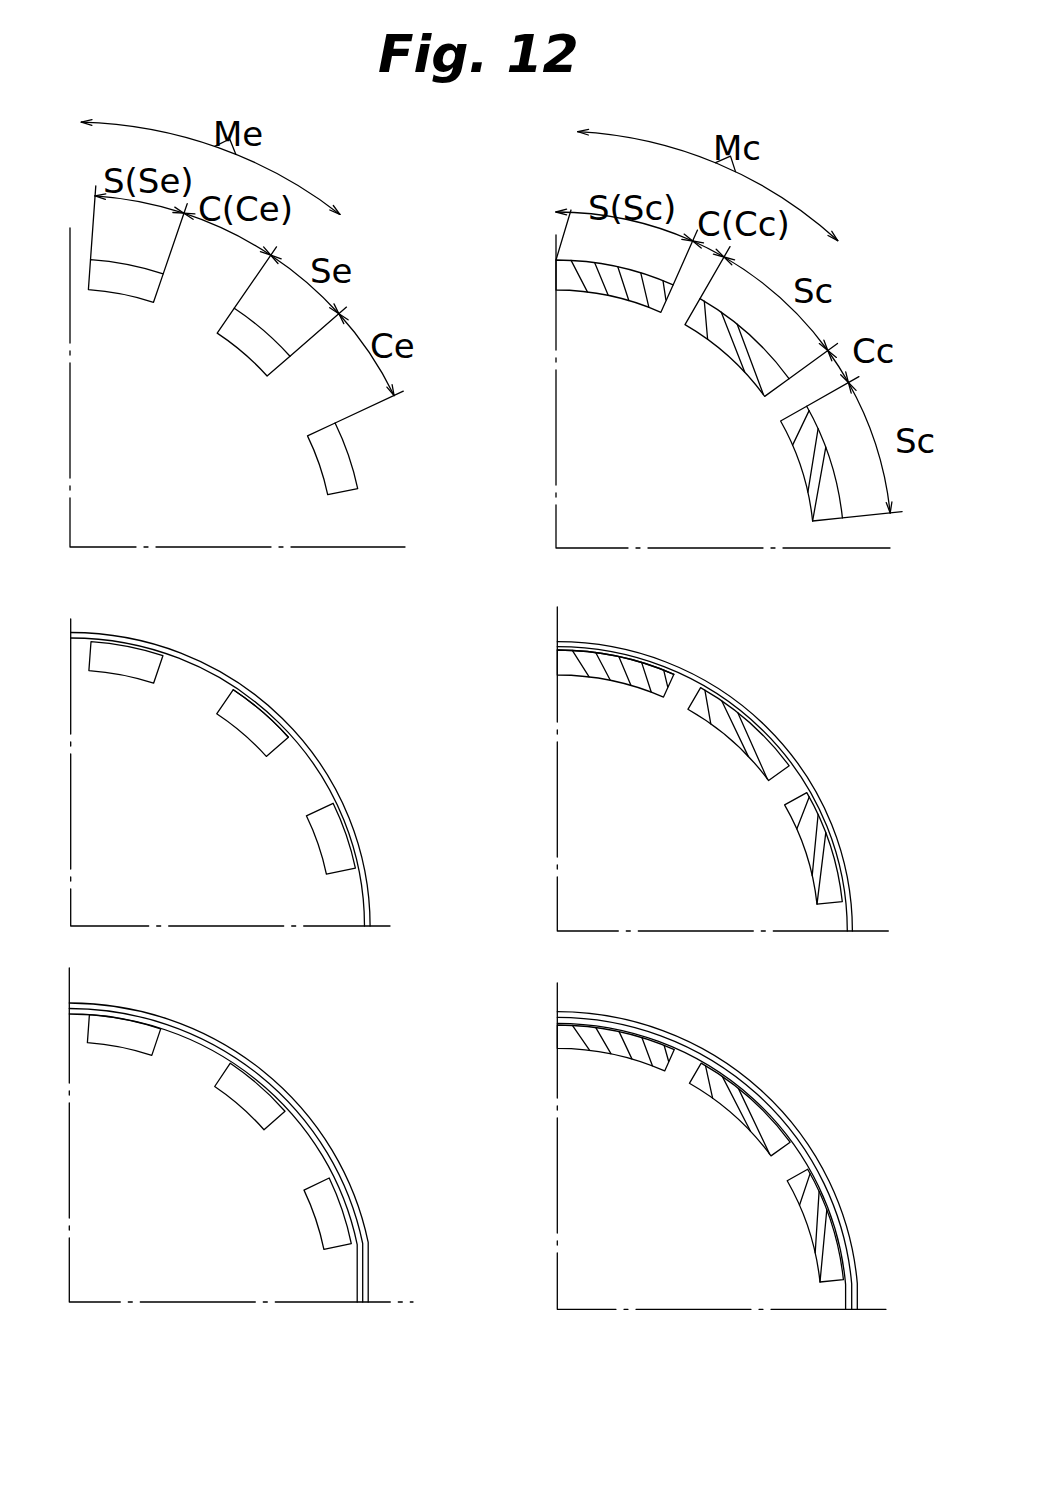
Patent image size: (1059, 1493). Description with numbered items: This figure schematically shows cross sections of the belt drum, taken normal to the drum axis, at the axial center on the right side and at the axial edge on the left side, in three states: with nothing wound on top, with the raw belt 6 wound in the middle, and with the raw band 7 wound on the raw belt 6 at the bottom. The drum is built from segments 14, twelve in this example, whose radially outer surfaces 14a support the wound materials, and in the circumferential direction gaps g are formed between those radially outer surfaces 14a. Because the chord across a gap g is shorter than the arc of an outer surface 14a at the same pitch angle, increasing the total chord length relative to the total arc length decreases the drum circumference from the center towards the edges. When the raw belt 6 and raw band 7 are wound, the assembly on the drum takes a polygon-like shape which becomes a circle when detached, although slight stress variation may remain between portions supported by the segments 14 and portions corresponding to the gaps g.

The segment 14 is at (242, 712).
The radially outer surface 14a is at (275, 714).
The raw belt 6 is at (325, 768).
The raw band 7 is at (366, 1303).
The gap g is at (187, 682).